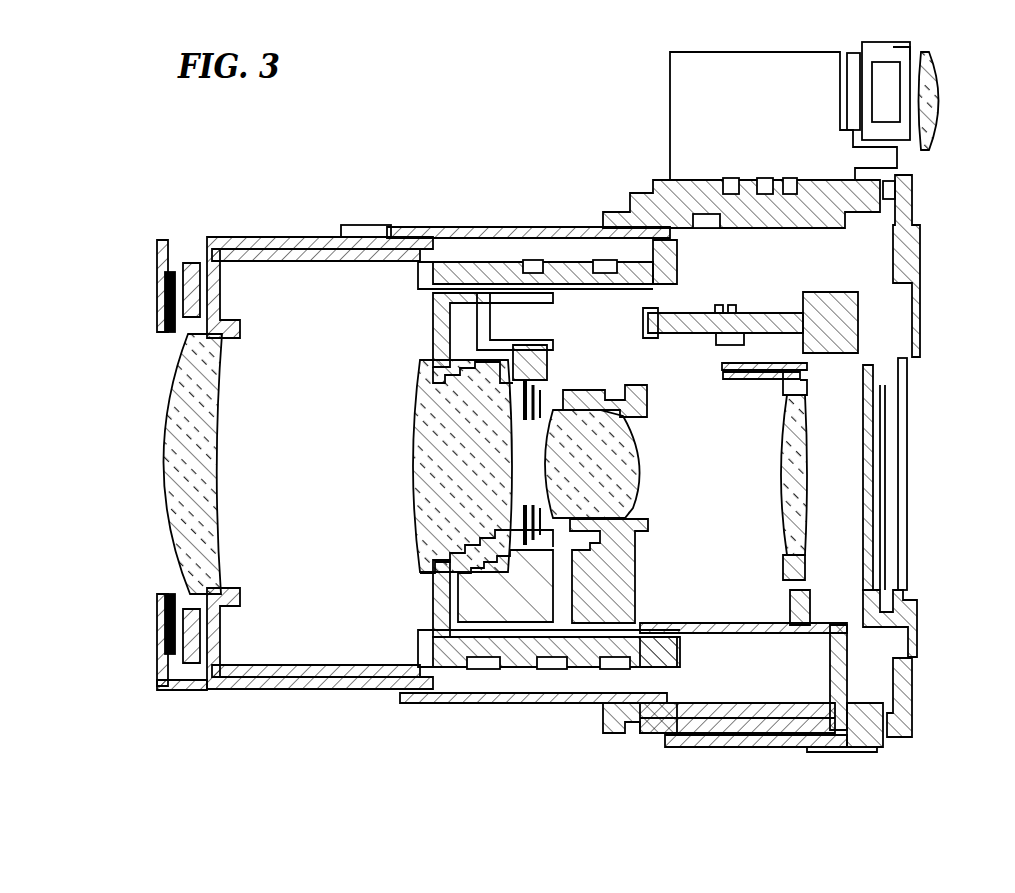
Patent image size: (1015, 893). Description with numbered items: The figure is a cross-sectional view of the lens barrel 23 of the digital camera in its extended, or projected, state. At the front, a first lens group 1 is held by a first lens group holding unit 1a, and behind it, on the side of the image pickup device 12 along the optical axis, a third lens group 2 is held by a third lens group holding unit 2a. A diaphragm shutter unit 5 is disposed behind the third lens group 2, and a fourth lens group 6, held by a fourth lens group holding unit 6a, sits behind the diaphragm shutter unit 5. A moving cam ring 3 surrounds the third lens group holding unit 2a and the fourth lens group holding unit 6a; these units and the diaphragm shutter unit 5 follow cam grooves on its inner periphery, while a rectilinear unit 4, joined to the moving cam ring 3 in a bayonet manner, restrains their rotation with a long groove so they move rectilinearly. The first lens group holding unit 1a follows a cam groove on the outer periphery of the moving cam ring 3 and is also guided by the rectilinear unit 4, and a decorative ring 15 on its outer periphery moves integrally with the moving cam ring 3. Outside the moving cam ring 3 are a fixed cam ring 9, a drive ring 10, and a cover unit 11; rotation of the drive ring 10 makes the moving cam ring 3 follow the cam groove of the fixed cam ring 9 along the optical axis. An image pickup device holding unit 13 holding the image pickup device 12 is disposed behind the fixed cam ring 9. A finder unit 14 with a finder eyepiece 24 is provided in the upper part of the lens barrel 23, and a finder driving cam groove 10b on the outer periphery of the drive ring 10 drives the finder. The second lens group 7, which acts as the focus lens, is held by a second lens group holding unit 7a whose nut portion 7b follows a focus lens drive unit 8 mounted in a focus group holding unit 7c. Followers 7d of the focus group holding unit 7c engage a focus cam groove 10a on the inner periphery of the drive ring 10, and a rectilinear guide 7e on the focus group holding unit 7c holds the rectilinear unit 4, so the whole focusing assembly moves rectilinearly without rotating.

The first lens group 1 is at (185, 445).
The first lens group holding unit 1a is at (305, 246).
The third lens group 2 is at (440, 455).
The third lens group holding unit 2a is at (435, 326).
The moving cam ring 3 is at (510, 670).
The rectilinear unit 4 is at (428, 668).
The diaphragm shutter unit 5 is at (470, 600).
The fourth lens group 6 is at (617, 470).
The fourth lens group holding unit 6a is at (632, 590).
The second lens group 7 is at (790, 470).
The second lens group holding unit 7a is at (790, 558).
The nut portion 7b is at (725, 345).
The focus group holding unit 7c is at (800, 620).
The followers 7d is at (848, 692).
The rectilinear guide 7e is at (600, 695).
The focus lens drive unit 8 is at (808, 310).
The fixed cam ring 9 is at (660, 715).
The drive ring 10 is at (715, 717).
The focus cam groove 10a is at (835, 740).
The finder driving cam groove 10b is at (720, 197).
The cover unit 11 is at (768, 738).
The image pickup device 12 is at (890, 428).
The image pickup device holding unit 13 is at (905, 200).
The finder unit 14 is at (685, 122).
The decorative ring 15 is at (460, 236).
The lens barrel 23 is at (390, 146).
The finder eyepiece 24 is at (933, 100).